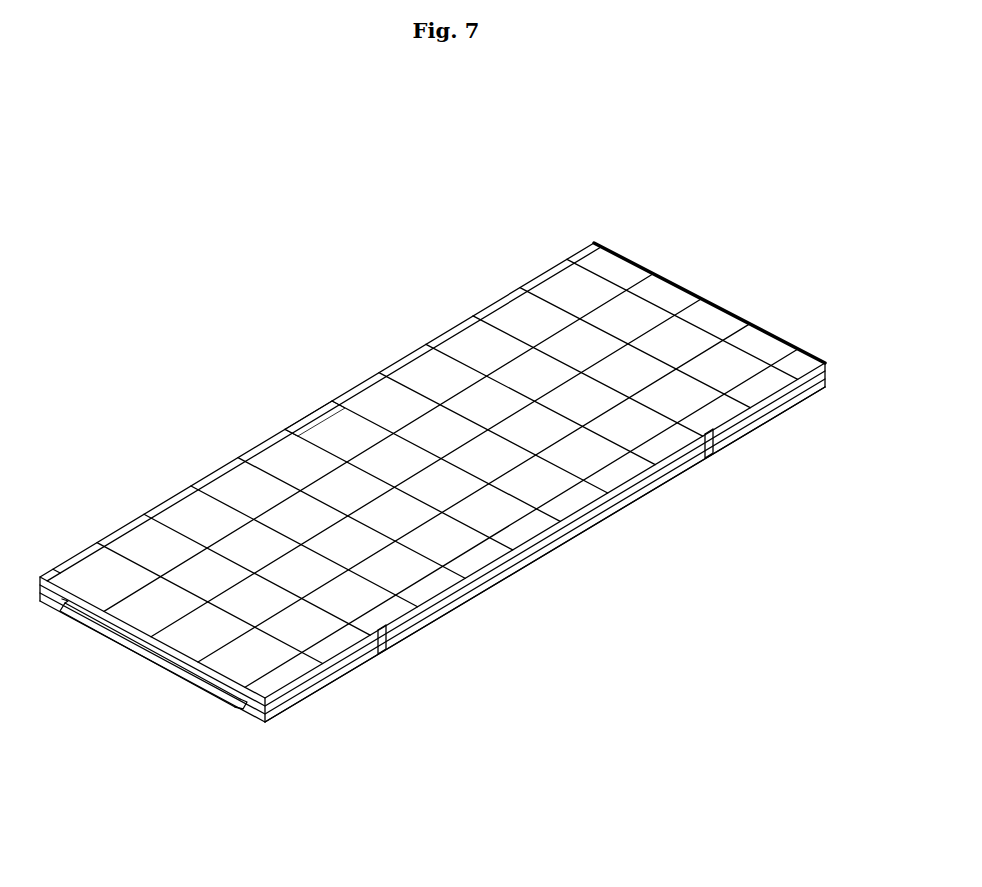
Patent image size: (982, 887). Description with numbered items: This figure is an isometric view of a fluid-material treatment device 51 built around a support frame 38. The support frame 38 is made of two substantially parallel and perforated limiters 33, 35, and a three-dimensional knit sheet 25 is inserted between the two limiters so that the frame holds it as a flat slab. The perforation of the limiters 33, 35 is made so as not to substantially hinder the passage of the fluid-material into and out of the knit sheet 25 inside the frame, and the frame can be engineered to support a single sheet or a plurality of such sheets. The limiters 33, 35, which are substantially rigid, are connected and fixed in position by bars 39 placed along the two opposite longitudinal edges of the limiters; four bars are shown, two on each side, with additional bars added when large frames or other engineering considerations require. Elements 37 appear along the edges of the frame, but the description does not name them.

The treatment device 51 is at (680, 256).
The support frame 38 is at (393, 314).
The perforated limiter 33 is at (330, 424).
The 3D knit sheet 25 is at (472, 590).
The perforated limiter 35 is at (344, 670).
The edge rail 37 is at (738, 318).
The bar 39 is at (712, 458).